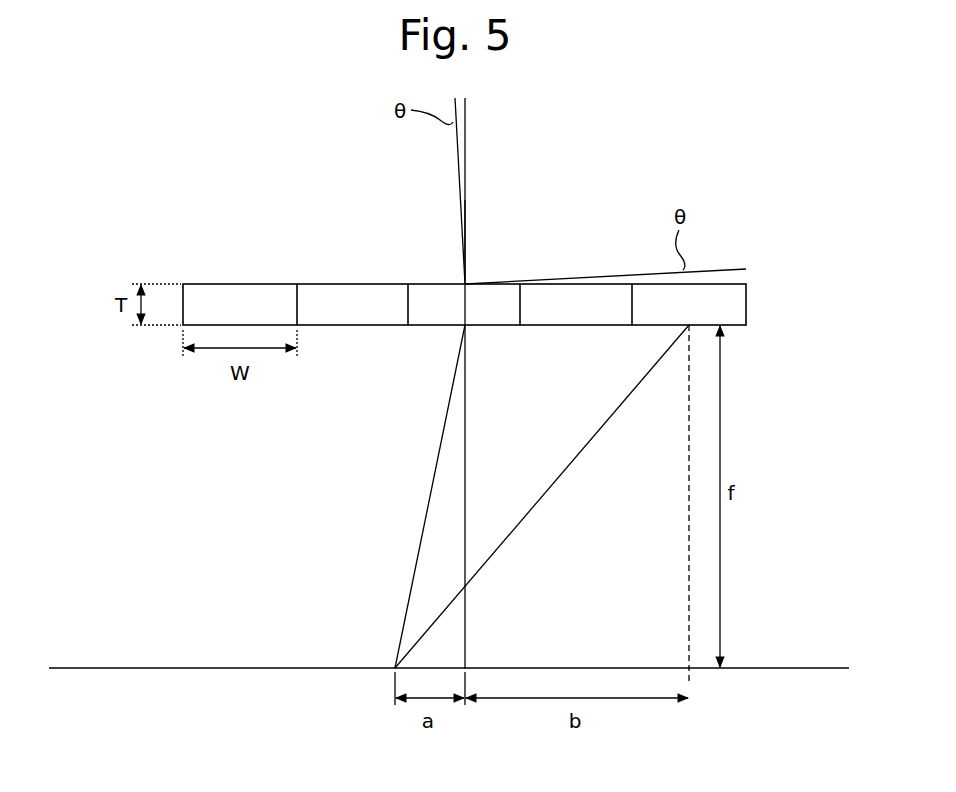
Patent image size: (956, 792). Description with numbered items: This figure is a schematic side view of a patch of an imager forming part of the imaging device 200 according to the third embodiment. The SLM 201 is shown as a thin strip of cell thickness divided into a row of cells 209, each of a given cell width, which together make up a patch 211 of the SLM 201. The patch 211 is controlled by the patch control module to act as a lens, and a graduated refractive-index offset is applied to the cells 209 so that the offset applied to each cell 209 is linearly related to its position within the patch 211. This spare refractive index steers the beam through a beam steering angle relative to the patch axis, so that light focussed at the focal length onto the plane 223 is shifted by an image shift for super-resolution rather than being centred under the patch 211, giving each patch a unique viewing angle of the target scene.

The imaging device 200 is at (158, 198).
The SLM 201 is at (516, 268).
The cells 209 is at (228, 297).
The patch 211 is at (388, 226).
The image plane / sensor 223 is at (206, 664).